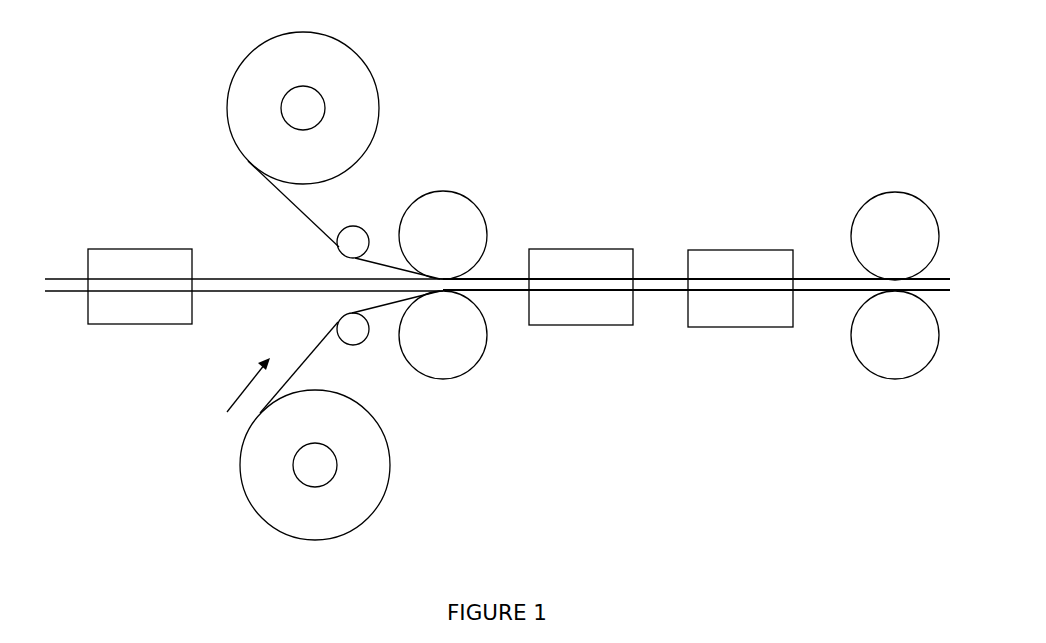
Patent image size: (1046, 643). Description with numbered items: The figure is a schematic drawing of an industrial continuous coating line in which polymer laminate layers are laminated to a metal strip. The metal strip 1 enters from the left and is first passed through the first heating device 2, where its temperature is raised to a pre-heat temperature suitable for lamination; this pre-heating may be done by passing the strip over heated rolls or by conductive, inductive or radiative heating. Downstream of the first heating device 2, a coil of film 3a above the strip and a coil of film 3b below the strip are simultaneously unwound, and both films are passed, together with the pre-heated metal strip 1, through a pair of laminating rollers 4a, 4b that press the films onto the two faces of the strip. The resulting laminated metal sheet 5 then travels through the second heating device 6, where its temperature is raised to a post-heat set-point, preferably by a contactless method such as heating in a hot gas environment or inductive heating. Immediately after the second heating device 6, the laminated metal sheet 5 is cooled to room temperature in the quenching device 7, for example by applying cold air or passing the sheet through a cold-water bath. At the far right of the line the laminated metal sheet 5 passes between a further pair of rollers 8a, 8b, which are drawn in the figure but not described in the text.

The metal strip 1 is at (55, 270).
The first heating device 2 is at (121, 240).
The coil of film 3a is at (287, 104).
The coil of film 3b is at (293, 469).
The laminating roller 4a is at (443, 218).
The laminating roller 4b is at (443, 352).
The laminated metal sheet 5 is at (503, 268).
The second heating device 6 is at (582, 240).
The quenching device 7 is at (738, 240).
The upper nip roller 8a is at (895, 215).
The lower nip roller 8b is at (895, 351).